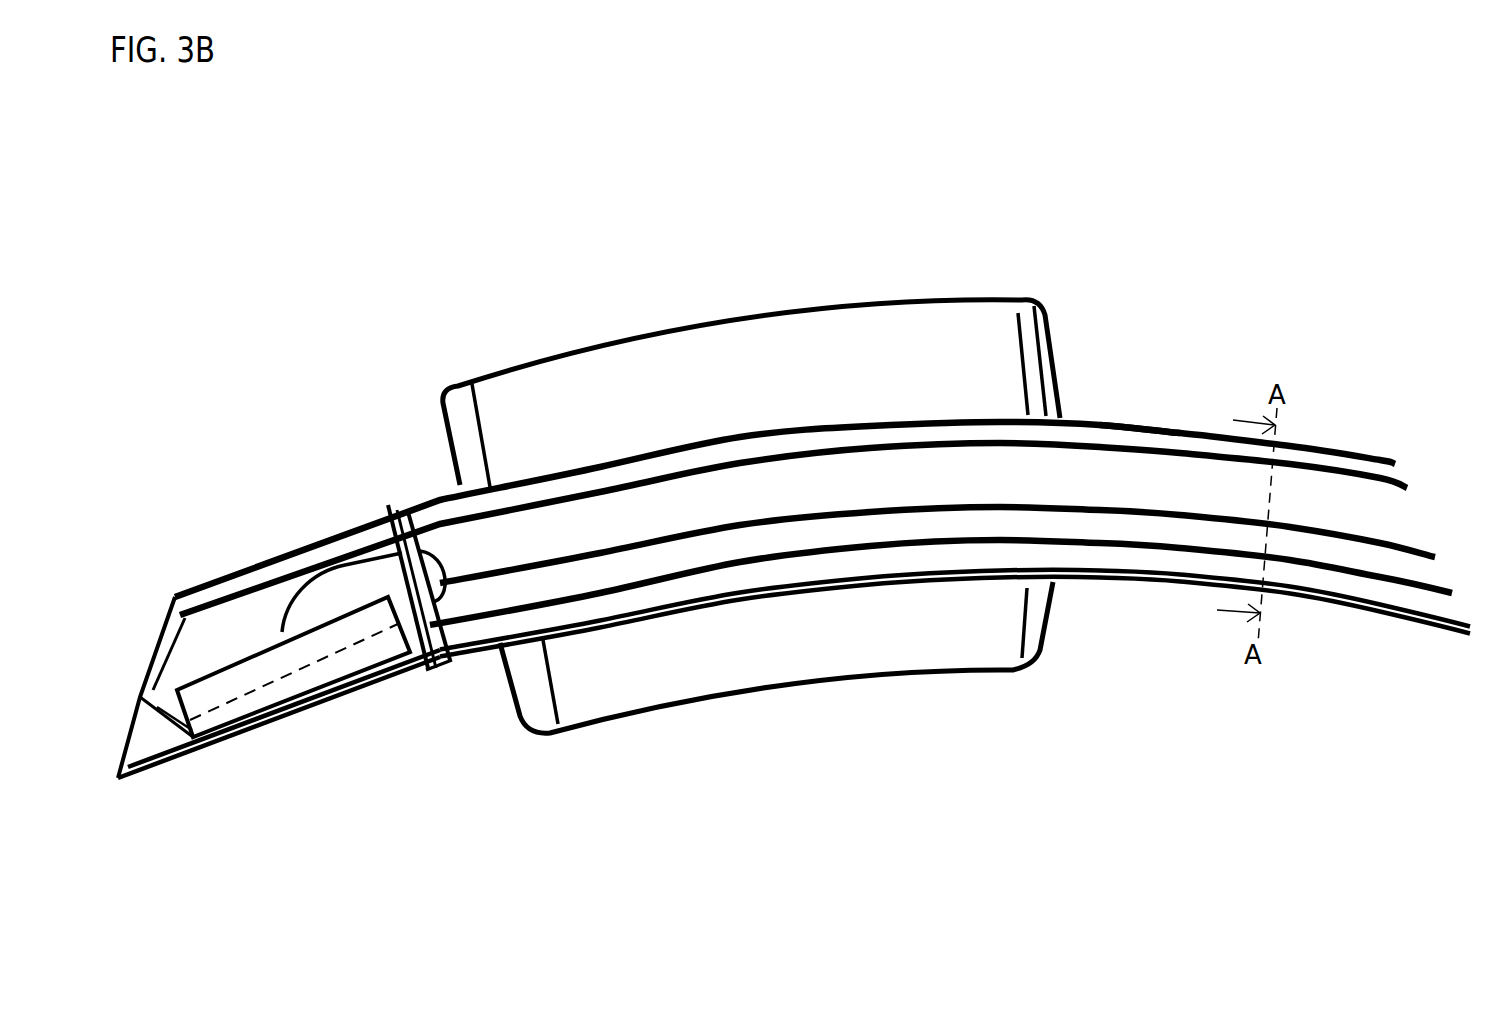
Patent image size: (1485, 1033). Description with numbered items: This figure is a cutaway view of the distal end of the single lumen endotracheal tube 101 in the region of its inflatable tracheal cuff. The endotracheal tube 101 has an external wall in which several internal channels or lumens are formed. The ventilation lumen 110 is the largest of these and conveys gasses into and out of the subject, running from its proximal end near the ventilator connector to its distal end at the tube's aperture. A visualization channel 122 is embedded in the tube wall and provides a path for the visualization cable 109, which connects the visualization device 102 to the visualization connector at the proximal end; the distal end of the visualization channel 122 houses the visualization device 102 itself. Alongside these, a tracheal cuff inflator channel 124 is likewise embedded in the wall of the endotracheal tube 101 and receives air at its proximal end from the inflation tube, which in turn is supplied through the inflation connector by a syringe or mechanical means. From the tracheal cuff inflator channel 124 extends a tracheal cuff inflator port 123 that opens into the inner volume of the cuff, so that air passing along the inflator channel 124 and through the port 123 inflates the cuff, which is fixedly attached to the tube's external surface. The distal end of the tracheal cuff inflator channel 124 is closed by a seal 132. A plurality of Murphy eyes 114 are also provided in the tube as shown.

The endotracheal tube 101 is at (1165, 428).
The visualization device 102 is at (290, 677).
The visualization cable 109 is at (1117, 560).
The ventilation lumen 110 is at (982, 477).
The Murphy eyes 114 is at (355, 580).
The visualization channel 122 is at (773, 573).
The tracheal cuff inflator port 123 is at (785, 440).
The tracheal cuff inflator channel 124 is at (1112, 427).
The seal 132 is at (172, 605).